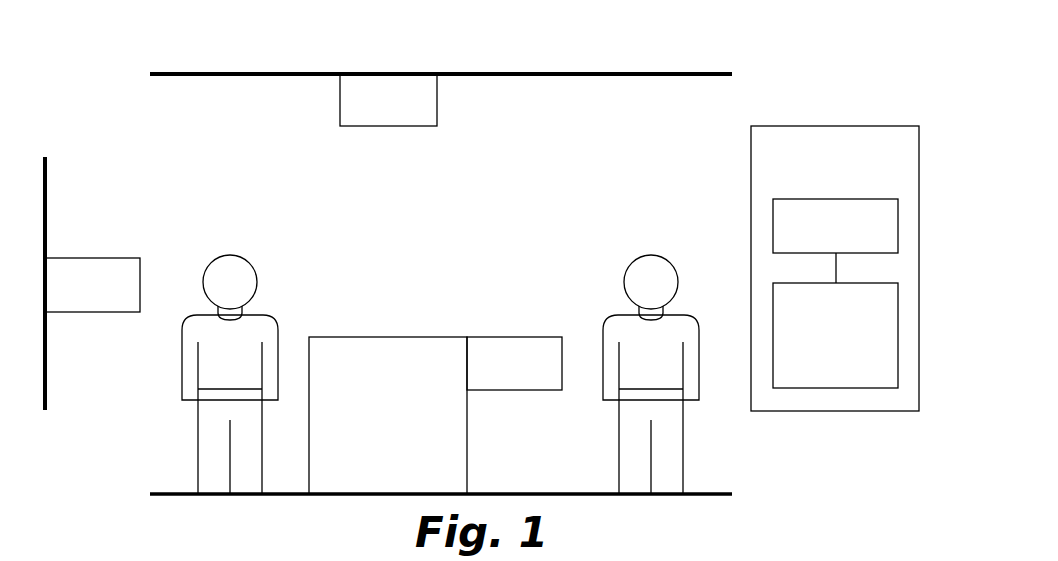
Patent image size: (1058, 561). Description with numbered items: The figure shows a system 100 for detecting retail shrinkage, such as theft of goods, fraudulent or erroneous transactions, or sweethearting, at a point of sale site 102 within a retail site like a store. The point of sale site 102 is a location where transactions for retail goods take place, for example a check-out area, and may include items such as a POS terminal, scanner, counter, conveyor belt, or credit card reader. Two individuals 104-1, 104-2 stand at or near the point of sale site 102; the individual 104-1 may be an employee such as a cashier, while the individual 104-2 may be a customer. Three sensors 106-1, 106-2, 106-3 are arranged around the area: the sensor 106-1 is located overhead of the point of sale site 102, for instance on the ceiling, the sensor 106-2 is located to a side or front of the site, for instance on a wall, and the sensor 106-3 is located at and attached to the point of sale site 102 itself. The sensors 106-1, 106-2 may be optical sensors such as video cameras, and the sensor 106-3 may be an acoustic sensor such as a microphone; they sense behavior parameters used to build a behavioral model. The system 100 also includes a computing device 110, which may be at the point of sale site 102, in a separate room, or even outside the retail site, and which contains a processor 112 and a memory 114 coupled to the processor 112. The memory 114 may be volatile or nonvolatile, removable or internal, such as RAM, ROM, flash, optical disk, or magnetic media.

The system 100 is at (134, 35).
The point of sale site 102 is at (454, 306).
The individual 104-1 is at (590, 256).
The individual 104-2 is at (292, 255).
The sensor 106-1 is at (383, 120).
The sensor 106-2 is at (104, 265).
The sensor 106-3 is at (520, 382).
The computing device 110 is at (835, 130).
The processor 112 is at (777, 226).
The memory 114 is at (831, 385).